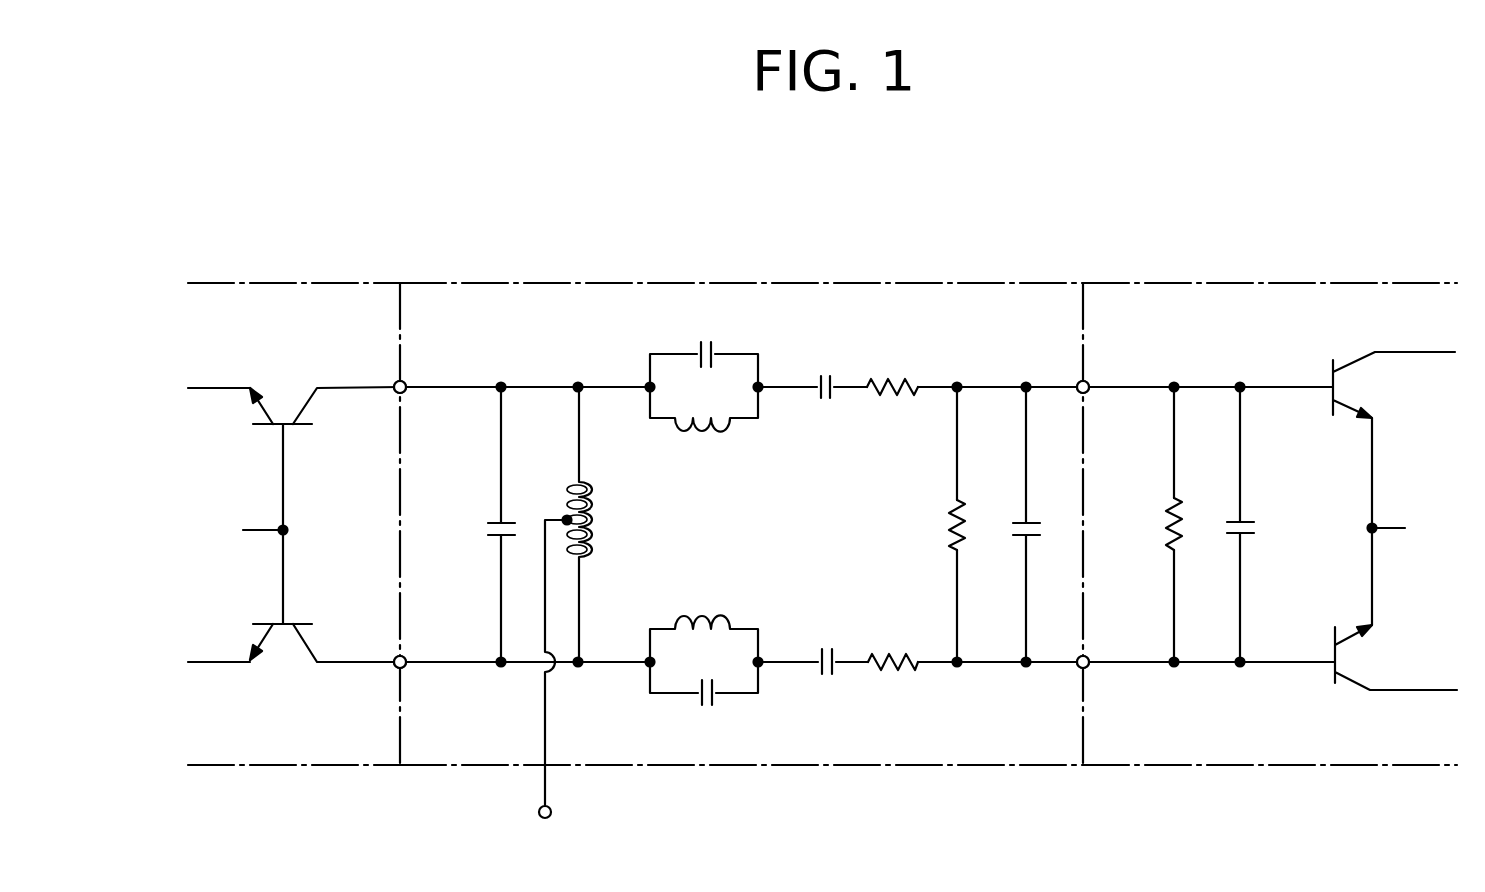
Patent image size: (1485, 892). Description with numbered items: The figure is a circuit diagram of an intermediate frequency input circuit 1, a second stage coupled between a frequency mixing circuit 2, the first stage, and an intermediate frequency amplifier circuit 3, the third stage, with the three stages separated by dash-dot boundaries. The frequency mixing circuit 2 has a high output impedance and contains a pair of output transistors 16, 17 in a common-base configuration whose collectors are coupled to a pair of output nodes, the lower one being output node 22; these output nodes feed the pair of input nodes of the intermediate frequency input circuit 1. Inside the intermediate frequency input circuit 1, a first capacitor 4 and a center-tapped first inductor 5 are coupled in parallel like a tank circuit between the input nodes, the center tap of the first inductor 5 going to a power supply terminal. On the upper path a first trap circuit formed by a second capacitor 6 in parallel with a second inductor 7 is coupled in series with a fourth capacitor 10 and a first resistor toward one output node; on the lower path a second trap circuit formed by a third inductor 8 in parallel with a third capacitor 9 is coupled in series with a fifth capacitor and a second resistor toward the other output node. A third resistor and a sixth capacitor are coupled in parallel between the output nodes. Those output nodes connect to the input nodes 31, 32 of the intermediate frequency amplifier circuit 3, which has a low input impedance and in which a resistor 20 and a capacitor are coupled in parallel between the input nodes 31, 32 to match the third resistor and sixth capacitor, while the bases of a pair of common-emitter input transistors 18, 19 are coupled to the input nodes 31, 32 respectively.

The intermediate frequency input circuit 1 is at (847, 281).
The frequency mixing circuit 2 is at (332, 281).
The intermediate frequency amplifier circuit 3 is at (1301, 281).
The first capacitor 4 is at (494, 522).
The first inductor 5 is at (590, 535).
The second capacitor 6 is at (714, 351).
The second inductor 7 is at (703, 436).
The third inductor 8 is at (711, 616).
The third capacitor 9 is at (715, 703).
The fourth capacitor 10 is at (814, 395).
The output transistor 16 is at (287, 400).
The output transistor 17 is at (280, 666).
The input transistor 18 is at (1350, 382).
The input transistor 19 is at (1355, 664).
The resistor 20 is at (1168, 518).
The output node 22 is at (395, 667).
The input node 31 is at (1088, 383).
The input node 32 is at (1088, 667).